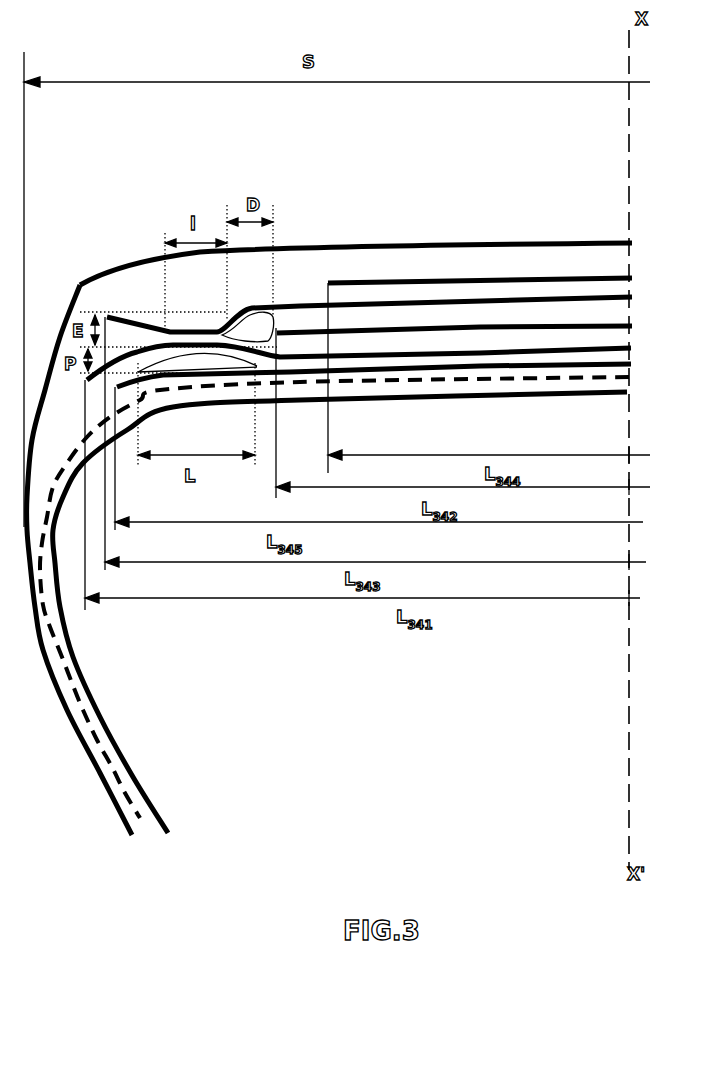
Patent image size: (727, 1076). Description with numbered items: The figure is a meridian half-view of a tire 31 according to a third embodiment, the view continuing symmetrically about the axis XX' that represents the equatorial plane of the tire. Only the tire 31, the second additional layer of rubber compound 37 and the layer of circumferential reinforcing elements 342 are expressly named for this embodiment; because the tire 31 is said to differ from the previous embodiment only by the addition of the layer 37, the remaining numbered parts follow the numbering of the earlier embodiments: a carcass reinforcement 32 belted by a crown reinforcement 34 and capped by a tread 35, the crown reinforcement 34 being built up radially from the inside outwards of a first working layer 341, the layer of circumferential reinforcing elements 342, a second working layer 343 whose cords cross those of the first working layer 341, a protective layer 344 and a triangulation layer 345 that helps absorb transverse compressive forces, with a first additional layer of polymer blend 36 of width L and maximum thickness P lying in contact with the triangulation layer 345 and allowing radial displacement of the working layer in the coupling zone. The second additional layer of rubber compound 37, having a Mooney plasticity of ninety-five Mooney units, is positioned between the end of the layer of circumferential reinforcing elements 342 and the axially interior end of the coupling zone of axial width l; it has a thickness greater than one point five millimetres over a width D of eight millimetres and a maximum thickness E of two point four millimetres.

The tire 31 is at (133, 180).
The sidewall 32 is at (55, 490).
The reinforcement structure 34 is at (400, 311).
The outer wall 35 is at (543, 243).
The thin layer 36 is at (170, 357).
The second additional layer of rubber compound 37 is at (262, 318).
The first reinforcing layer 341 is at (405, 355).
The layer of circumferential reinforcing elements 342 is at (477, 328).
The third reinforcing layer 343 is at (362, 300).
The fourth reinforcing layer 344 is at (435, 280).
The fifth reinforcing layer 345 is at (573, 367).